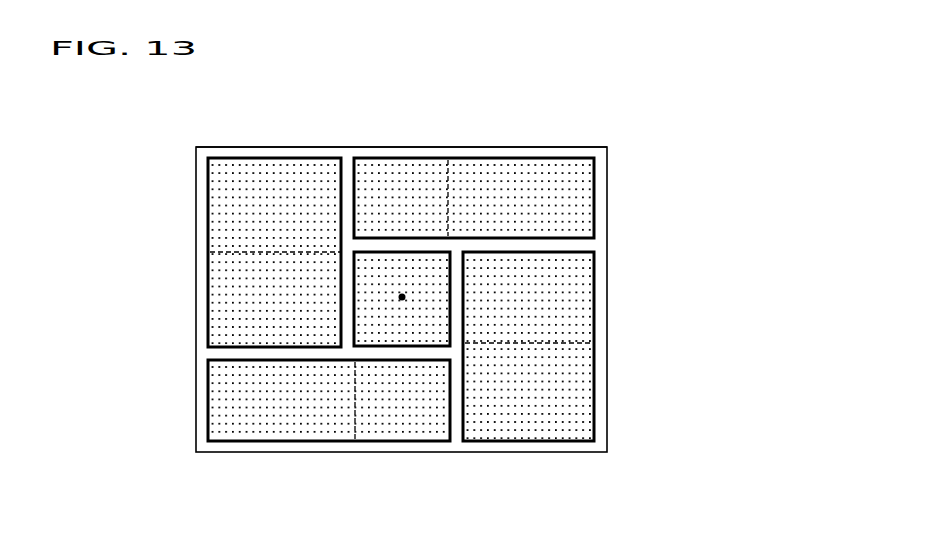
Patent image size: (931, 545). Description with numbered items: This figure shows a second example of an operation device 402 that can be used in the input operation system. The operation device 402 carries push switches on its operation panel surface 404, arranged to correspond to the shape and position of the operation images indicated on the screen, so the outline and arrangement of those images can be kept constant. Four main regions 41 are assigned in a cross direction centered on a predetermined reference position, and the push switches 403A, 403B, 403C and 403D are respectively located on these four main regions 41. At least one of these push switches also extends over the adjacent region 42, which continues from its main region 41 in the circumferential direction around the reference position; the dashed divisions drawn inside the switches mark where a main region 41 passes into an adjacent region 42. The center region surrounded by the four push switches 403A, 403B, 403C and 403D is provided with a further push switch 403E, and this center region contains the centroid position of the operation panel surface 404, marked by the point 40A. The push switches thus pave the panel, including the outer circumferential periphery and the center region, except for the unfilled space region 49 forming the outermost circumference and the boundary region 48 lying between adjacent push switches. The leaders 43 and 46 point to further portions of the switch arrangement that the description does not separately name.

The operation device 402 is at (561, 135).
The operation panel surface 404 is at (485, 150).
The push switch 403A is at (221, 276).
The push switch 403B is at (423, 427).
The push switch 403C is at (567, 310).
The push switch 403D is at (418, 174).
The push switch 403E is at (423, 274).
The measurement point 40A is at (402, 297).
The main region 41 is at (383, 172).
The adjacent region 42 is at (578, 185).
The connection line 43 is at (375, 323).
The corner portion 46 is at (243, 333).
The boundary region 48 is at (397, 353).
The unfilled space region 49 is at (600, 376).